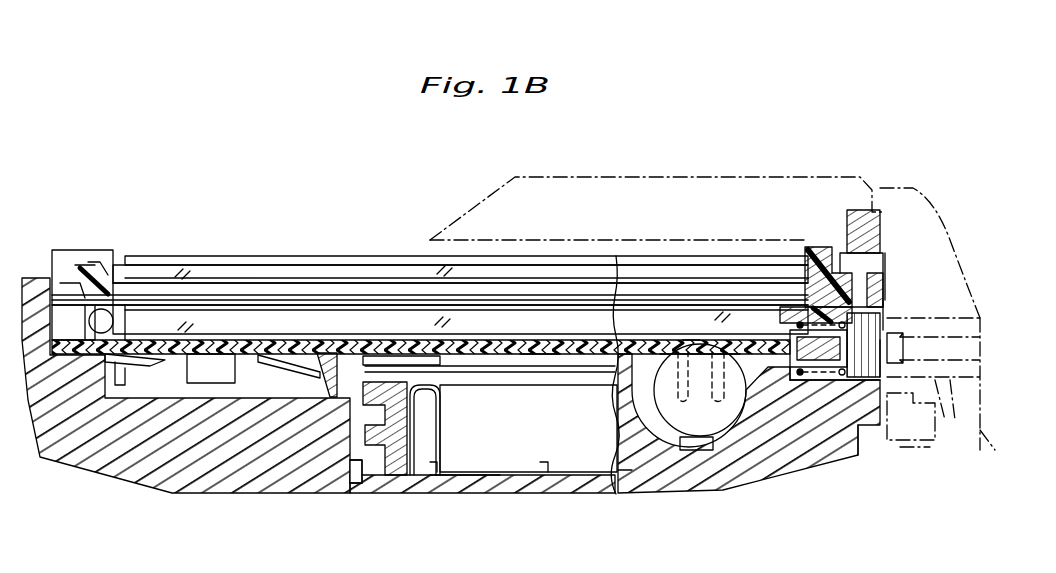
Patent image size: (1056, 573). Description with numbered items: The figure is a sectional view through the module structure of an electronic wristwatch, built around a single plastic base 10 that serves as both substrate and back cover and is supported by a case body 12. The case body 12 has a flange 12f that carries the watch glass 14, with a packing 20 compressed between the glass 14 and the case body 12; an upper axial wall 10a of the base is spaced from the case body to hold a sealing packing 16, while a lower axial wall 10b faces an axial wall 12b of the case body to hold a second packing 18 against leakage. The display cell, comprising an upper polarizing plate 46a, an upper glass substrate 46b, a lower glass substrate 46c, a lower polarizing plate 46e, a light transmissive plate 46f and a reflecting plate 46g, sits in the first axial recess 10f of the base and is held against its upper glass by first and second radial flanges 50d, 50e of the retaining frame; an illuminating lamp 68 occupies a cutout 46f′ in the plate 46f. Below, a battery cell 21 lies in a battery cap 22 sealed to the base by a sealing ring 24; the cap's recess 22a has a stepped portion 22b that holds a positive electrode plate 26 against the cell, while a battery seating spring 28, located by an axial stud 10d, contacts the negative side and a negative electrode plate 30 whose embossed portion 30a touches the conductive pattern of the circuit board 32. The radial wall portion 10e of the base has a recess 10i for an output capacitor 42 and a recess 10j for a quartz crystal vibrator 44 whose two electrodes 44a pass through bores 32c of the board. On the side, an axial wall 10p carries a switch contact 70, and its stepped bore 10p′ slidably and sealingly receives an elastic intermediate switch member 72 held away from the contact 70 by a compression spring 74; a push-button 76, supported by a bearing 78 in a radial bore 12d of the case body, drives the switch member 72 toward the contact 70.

The plastic base 10 is at (295, 496).
The axial wall 10a is at (893, 277).
The axial wall 10b is at (877, 440).
The axial stud 10d is at (313, 376).
The radial wall portion 10e is at (535, 354).
The first axial recess 10f is at (66, 318).
The axially extending recess 10i is at (113, 393).
The axially extending recess 10j is at (625, 470).
The axial wall 10p is at (802, 380).
The axially extending stepped bore 10p′ is at (820, 390).
The case body 12 is at (913, 190).
The axial wall 12b is at (907, 447).
The radial bore 12d is at (982, 430).
The flange 12f is at (845, 272).
The watch glass 14 is at (765, 177).
The sealing ring or packing 16 is at (880, 327).
The second sealing ring or packing 18 is at (887, 462).
The packing 20 is at (878, 210).
The battery cell 21 is at (528, 428).
The battery cap or hatch 22 is at (492, 483).
The axially indented recess 22a is at (547, 463).
The stepped portion 22b is at (415, 476).
The sealing ring 24 is at (362, 478).
The positive electrode plate 26 is at (468, 476).
The battery seating spring 28 is at (250, 370).
The negative electrode plate 30 is at (378, 476).
The embossed portion 30a is at (352, 478).
The circuit board 32 is at (173, 357).
The bores 32c is at (693, 340).
The output capacitor 42 is at (210, 383).
The quartz crystal vibrator 44 is at (715, 400).
The electrodes 44a is at (705, 450).
The upper polarizing plate 46a is at (283, 260).
The upper glass substrate 46b is at (333, 275).
The lower glass substrate 46c is at (370, 288).
The lower polarizing plate 46e is at (415, 310).
The light transmissive plate 46f is at (233, 323).
The cutout 46f′ is at (123, 317).
The reflecting plate 46g is at (205, 339).
The first radial flange 50d is at (103, 272).
The second radial flange 50e is at (836, 248).
The illuminating lamp 68 is at (113, 327).
The switch contact 70 is at (790, 365).
The intermediate switch member 72 is at (880, 345).
The compression spring 74 is at (840, 420).
The push-button 76 is at (943, 370).
The bearing 78 is at (953, 410).